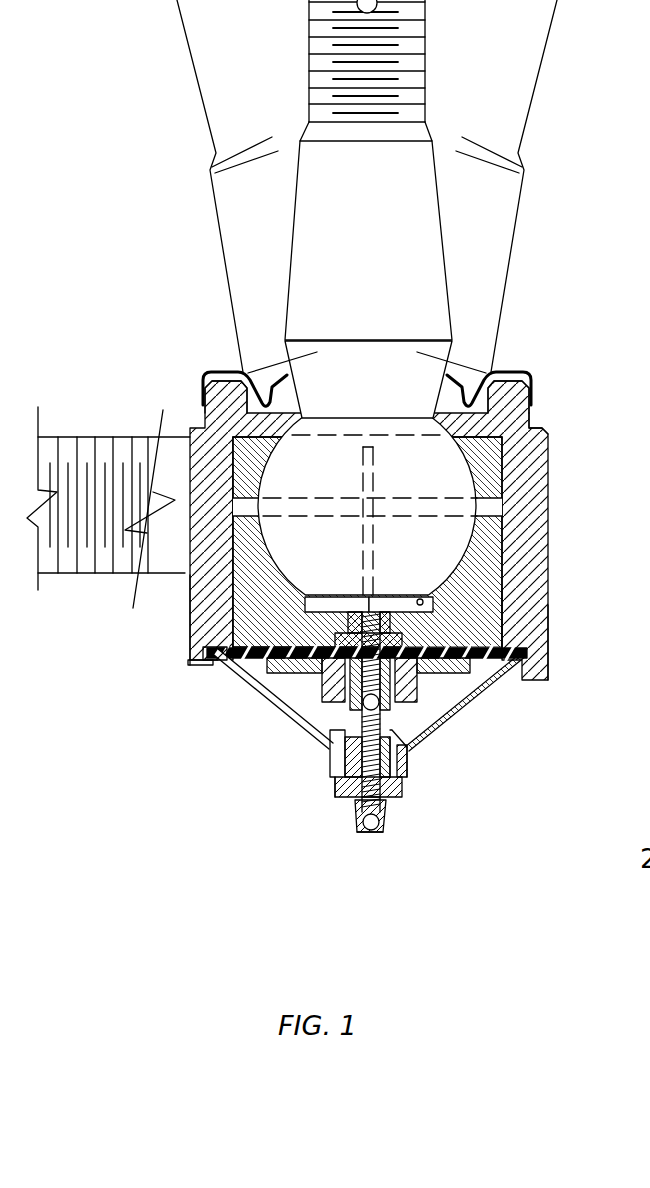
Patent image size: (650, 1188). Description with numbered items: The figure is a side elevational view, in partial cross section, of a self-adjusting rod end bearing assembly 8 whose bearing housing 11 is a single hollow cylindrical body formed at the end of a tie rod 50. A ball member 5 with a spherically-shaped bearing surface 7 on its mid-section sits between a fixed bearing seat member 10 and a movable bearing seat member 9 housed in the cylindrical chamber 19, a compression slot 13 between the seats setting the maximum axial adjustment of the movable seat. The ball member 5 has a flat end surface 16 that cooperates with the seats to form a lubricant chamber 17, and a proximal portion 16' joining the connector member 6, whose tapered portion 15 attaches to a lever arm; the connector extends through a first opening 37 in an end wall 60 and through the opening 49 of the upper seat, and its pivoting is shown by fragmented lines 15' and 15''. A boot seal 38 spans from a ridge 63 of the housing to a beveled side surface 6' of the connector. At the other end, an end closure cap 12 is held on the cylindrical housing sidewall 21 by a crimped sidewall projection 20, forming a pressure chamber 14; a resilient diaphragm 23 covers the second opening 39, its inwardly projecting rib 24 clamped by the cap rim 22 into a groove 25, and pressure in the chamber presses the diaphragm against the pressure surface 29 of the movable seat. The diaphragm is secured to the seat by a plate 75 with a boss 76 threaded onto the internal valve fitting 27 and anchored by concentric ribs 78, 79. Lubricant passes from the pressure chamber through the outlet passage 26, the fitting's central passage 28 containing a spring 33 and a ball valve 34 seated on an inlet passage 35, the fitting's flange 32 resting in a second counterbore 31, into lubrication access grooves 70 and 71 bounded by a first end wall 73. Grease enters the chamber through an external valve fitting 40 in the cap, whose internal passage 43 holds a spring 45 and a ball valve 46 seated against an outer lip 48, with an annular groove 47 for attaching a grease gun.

The ball member 5 is at (367, 506).
The connector member 6 is at (367, 124).
The beveled side surface 6' is at (498, 347).
The bearing surface 7 is at (278, 450).
The self-adjusting rod end bearing assembly 8 is at (143, 757).
The movable bearing seat member 9 is at (512, 540).
The fixed bearing seat member 10 is at (502, 447).
The bearing housing 11 is at (185, 598).
The end closure cap 12 is at (280, 710).
The compression slot 13 is at (547, 484).
The pressure chamber 14 is at (253, 713).
The tapered portion 15 is at (434, 190).
The fragmented line 15' is at (210, 186).
The fragmented line 15'' is at (525, 186).
The flat end surface 16 is at (439, 562).
The proximal portion 16' is at (367, 379).
The lubricant chamber 17 is at (340, 600).
The cylindrical chamber 19 is at (505, 513).
The crimped sidewall projection 20 is at (193, 680).
The cylindrical housing sidewall 21 is at (187, 617).
The cap rim 22 is at (187, 655).
The diaphragm 23 is at (280, 687).
The inwardly projecting rib 24 is at (548, 650).
The groove 25 is at (548, 628).
The outlet passage 26 is at (330, 725).
The internal valve fitting 27 is at (487, 720).
The central passage 28 is at (373, 610).
The pressure surface 29 is at (505, 590).
The second counterbore 31 is at (387, 602).
The flange 32 is at (313, 593).
The spring 33 is at (353, 606).
The ball valve 34 is at (452, 730).
The inlet passage 35 is at (410, 760).
The first opening 37 is at (488, 373).
The boot seal 38 is at (223, 373).
The second opening / external passage 39 is at (473, 638).
The external valve fitting 40 is at (384, 835).
The internal passage 43 is at (403, 826).
The spring 45 is at (340, 740).
The ball valve 46 is at (366, 832).
The annular groove 47 is at (355, 805).
The outer lip 48 is at (381, 834).
The opening 49 is at (350, 417).
The tie rod 50 is at (87, 435).
The end wall 60 is at (545, 422).
The ridge 63 is at (202, 382).
The lubrication access groove 70 is at (367, 525).
The lubrication access groove 71 is at (372, 474).
The first end wall 73 is at (380, 417).
The plate 75 is at (297, 663).
The boss 76 is at (322, 695).
The concentric rib 78 is at (440, 700).
The concentric rib 79 is at (402, 710).